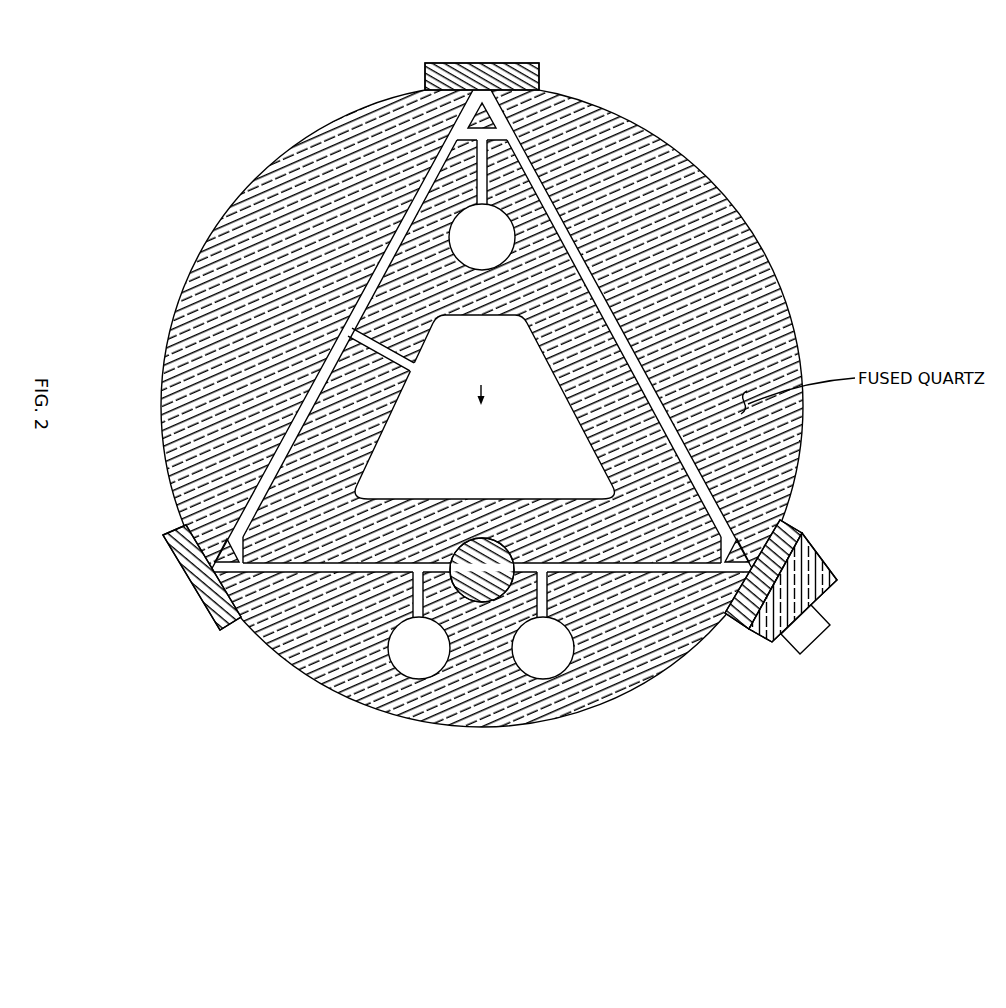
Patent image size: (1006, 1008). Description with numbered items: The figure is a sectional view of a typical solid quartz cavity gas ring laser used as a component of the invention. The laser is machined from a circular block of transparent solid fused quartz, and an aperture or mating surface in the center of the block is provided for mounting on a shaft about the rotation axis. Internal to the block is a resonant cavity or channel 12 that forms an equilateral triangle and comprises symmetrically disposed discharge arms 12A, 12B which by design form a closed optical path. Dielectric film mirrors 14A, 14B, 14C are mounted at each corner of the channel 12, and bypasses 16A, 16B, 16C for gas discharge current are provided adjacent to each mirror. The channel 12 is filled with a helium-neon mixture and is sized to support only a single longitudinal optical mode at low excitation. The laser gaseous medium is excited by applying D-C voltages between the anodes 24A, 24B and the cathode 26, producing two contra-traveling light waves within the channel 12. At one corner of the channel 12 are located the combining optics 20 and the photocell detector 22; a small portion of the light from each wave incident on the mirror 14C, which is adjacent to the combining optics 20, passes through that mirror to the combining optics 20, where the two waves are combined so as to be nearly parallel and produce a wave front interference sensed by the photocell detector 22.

The resonant cavity or channel 12 is at (485, 444).
The discharge arm 12A is at (265, 473).
The discharge arm 12B is at (760, 500).
The dielectric film mirror 14A is at (531, 63).
The dielectric film mirror 14B is at (210, 619).
The dielectric film mirror 14C is at (803, 540).
The bypass 16A is at (500, 133).
The bypass 16B is at (243, 533).
The bypass 16C is at (722, 513).
The combining optics 20 is at (838, 581).
The photocell detector 22 is at (812, 634).
The anode 24A is at (415, 668).
The anode 24B is at (560, 660).
The cathode 26 is at (508, 231).